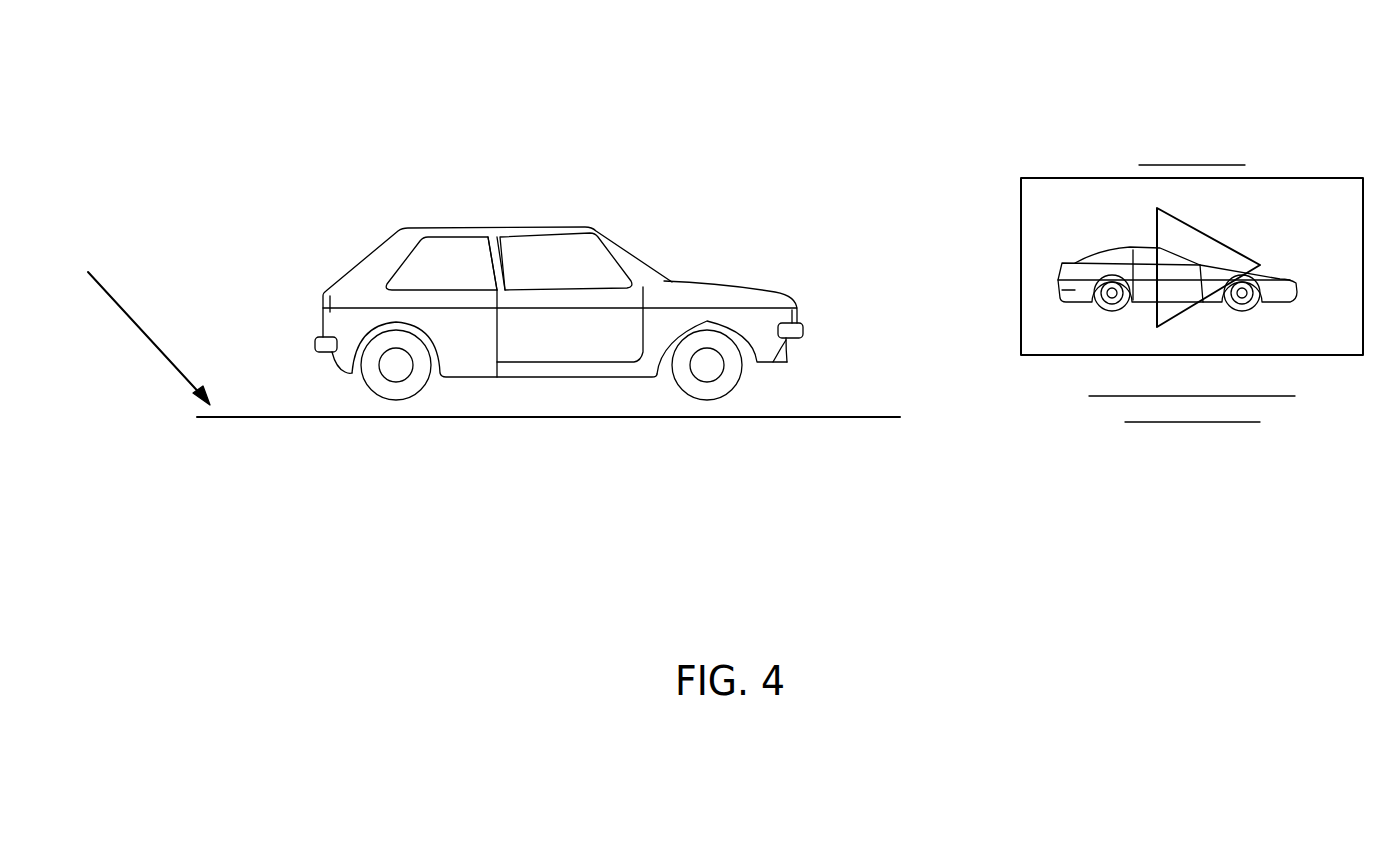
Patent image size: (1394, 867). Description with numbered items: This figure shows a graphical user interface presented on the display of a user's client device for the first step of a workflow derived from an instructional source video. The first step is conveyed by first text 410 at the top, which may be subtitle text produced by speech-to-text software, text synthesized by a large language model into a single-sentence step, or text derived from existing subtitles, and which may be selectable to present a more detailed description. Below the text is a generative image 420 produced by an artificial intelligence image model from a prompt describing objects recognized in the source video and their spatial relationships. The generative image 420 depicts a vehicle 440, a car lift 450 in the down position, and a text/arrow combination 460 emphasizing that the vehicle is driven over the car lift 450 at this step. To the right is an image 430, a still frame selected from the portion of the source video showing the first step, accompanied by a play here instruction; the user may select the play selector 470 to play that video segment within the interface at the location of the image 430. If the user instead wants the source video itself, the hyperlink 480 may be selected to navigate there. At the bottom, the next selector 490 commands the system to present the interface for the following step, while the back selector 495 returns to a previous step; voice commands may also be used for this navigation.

The first text 410 is at (716, 66).
The generative image 420 is at (637, 255).
The still frame image 430 is at (1327, 177).
The vehicle 440 is at (805, 333).
The car lift 450 is at (705, 419).
The text/arrow combination 460 is at (90, 258).
The play selector 470 is at (1157, 237).
The hyperlink 480 is at (1305, 392).
The next selector 490 is at (995, 563).
The back selector 495 is at (1180, 563).